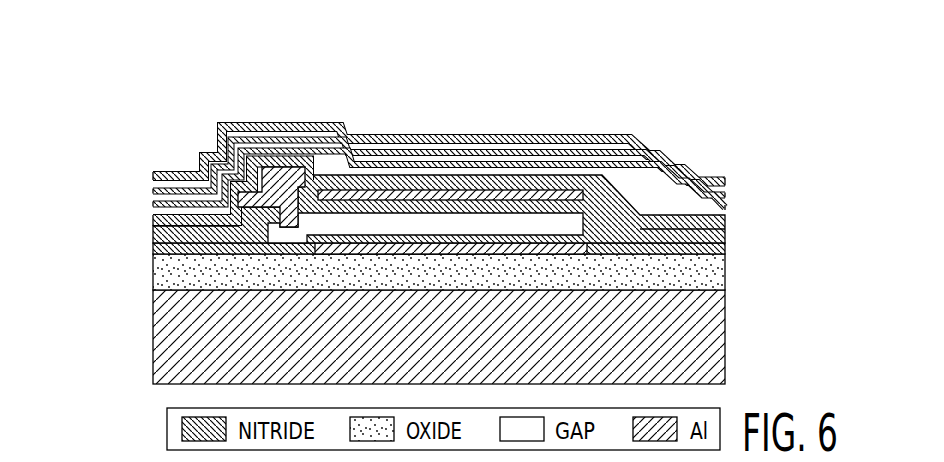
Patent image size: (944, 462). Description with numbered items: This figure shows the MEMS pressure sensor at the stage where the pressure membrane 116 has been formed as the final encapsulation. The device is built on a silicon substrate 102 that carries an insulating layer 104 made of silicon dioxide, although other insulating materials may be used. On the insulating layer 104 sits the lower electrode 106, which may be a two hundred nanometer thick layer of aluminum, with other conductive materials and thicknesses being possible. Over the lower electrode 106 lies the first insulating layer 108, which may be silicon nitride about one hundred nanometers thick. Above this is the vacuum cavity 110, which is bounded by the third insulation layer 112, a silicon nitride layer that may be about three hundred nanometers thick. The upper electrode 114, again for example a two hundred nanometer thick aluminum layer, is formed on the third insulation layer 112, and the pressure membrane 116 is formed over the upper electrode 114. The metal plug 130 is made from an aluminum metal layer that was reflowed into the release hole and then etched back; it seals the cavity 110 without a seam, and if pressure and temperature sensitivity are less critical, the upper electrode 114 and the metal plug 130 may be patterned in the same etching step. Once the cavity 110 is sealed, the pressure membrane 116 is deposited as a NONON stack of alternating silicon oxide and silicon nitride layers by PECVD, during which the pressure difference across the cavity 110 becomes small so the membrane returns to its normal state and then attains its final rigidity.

The silicon substrate 102 is at (153, 373).
The insulating layer 104 is at (153, 277).
The lower electrode 106 is at (585, 258).
The first insulating layer 108 is at (153, 250).
The vacuum cavity 110 is at (272, 236).
The third insulation layer 112 is at (727, 238).
The upper electrode 114 is at (409, 193).
The pressure membrane 116 is at (552, 162).
The metal plug 130 is at (276, 176).